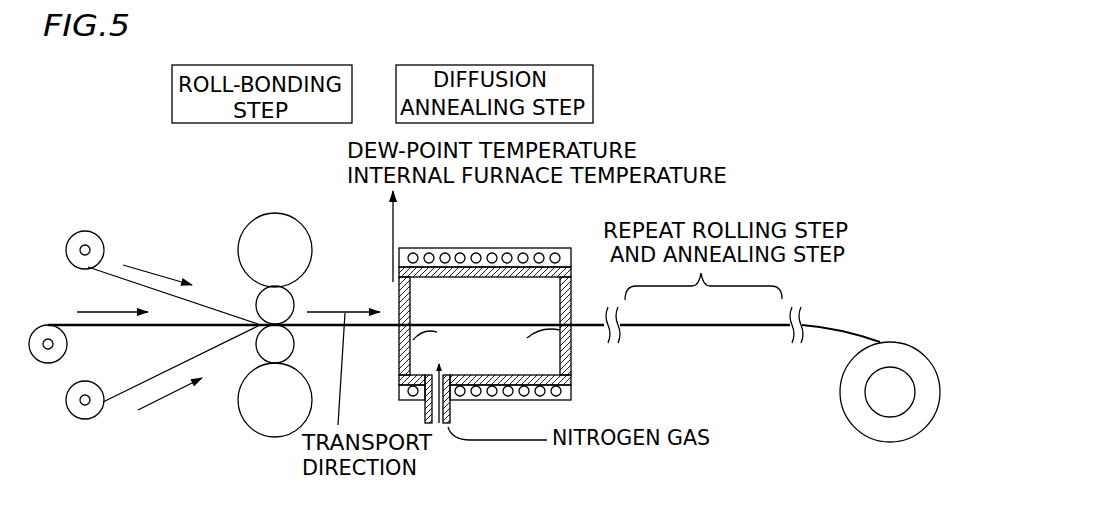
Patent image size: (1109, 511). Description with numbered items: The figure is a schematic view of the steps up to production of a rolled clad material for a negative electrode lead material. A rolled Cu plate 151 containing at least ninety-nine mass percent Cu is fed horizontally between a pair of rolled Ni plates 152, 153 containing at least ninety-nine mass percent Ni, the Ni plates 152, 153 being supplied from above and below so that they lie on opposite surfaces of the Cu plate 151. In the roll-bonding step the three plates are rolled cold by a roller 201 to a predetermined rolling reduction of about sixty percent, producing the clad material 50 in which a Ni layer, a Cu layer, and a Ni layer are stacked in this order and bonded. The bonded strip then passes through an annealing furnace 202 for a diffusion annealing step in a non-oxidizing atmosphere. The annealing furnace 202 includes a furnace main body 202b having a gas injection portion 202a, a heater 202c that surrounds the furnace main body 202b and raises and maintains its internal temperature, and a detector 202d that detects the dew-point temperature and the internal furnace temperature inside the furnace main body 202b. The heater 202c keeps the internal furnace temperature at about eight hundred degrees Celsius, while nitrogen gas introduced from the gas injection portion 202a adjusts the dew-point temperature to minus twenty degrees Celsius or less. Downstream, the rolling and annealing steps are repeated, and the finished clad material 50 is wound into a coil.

The clad material 50 is at (898, 352).
The Cu plate 151 is at (43, 323).
The Ni plate 152 is at (80, 231).
The Ni plate 153 is at (89, 420).
The roller 201 is at (275, 211).
The annealing furnace 202 is at (485, 239).
The gas injection portion 202a is at (458, 415).
The furnace main body 202b is at (572, 355).
The heater 202c is at (552, 248).
The detector 202d is at (396, 283).